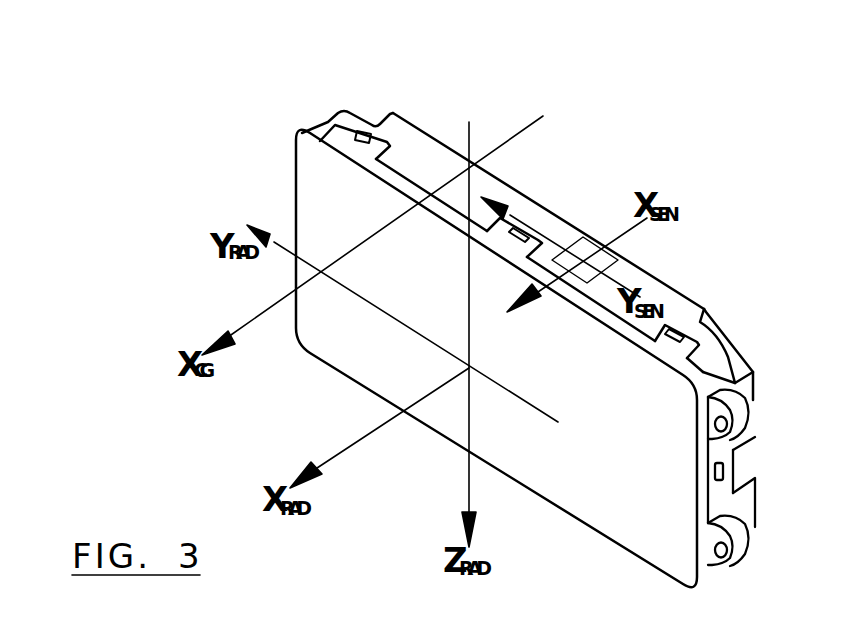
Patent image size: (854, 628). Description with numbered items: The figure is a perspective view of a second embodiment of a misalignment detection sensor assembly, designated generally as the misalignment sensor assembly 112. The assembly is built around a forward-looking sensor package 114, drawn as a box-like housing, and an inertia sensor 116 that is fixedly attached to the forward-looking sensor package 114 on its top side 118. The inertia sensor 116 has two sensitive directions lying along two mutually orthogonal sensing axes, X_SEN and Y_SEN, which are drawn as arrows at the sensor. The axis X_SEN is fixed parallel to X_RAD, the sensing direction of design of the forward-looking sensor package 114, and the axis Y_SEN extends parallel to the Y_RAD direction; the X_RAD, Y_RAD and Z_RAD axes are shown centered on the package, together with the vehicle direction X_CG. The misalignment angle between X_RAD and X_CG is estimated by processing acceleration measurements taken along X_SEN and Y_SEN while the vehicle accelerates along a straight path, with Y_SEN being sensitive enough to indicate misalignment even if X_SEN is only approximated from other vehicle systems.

The misalignment sensor assembly 112 is at (205, 131).
The forward-looking sensor package 114 is at (340, 192).
The inertia sensor 116 is at (587, 243).
The top side 118 is at (410, 128).